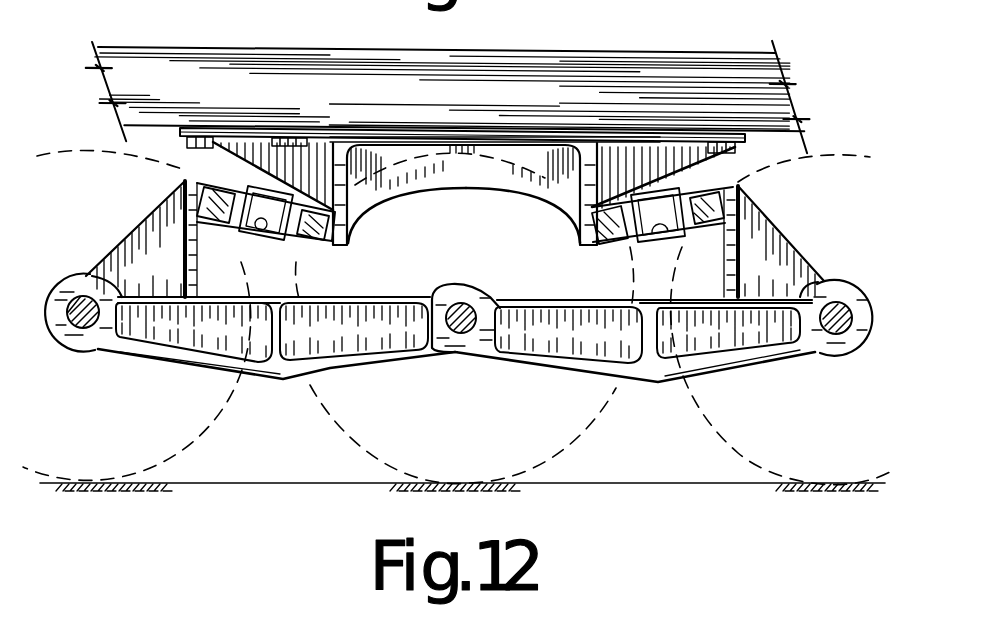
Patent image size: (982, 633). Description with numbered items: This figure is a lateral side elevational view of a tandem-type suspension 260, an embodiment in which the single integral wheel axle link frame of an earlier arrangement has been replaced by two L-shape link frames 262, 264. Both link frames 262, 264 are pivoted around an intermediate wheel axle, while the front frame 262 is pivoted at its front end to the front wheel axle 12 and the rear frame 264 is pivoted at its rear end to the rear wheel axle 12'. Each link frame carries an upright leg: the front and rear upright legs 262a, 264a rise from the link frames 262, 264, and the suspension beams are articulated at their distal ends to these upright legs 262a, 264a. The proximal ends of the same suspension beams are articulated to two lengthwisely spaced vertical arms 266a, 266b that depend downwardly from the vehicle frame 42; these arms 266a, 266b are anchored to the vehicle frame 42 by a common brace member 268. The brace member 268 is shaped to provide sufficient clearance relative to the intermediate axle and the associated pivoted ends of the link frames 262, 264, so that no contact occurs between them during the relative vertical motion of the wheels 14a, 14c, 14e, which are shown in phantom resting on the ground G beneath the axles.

The vehicle frame 42 is at (337, 100).
The brace member 268 is at (270, 135).
The suspension 260 is at (233, 181).
The front L-shape link frame 262 is at (352, 300).
The rear L-shape link frame 264 is at (545, 322).
The front upright leg 262a is at (188, 221).
The rear upright leg 264a is at (758, 230).
The vertical arm 266a is at (349, 205).
The vertical arm 266b is at (588, 184).
The front wheel axle 12 is at (78, 298).
The rear wheel axle 12' is at (842, 301).
The wheel 14a is at (190, 456).
The wheel 14e is at (540, 450).
The wheel 14c is at (758, 455).
The ground G is at (300, 468).